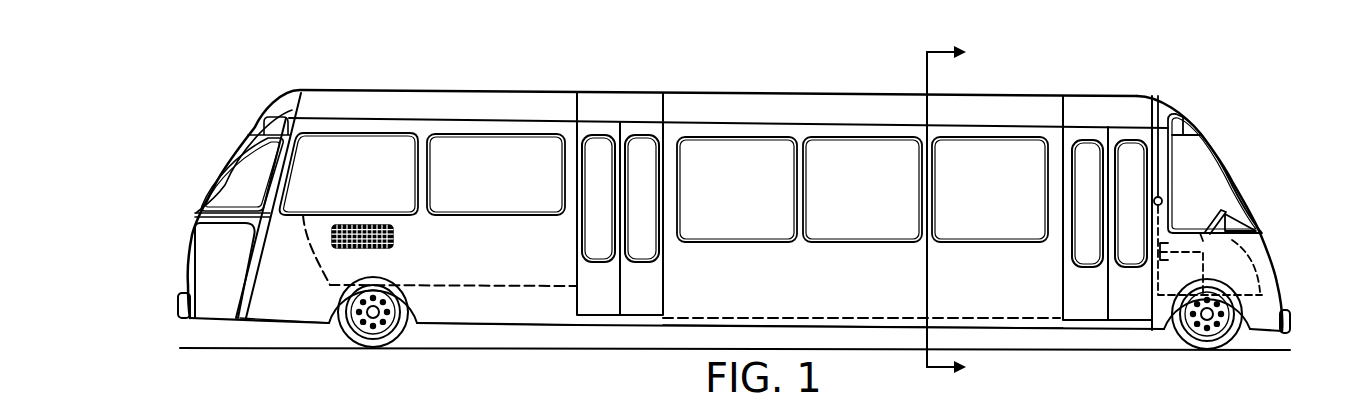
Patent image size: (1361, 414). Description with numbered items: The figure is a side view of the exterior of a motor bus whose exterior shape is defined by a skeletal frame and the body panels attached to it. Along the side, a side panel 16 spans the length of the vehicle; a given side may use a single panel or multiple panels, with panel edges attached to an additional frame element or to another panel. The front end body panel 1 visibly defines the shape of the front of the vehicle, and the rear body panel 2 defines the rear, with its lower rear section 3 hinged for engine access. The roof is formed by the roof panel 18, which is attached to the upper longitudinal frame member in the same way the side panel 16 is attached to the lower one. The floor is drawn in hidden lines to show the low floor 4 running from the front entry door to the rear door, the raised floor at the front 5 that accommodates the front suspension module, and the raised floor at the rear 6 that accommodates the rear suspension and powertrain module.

The front end body panel 1 is at (1253, 250).
The rear body panel 2 is at (283, 108).
The lower rear section 3 is at (198, 252).
The low floor 4 is at (878, 318).
The raised floor at the front 5 is at (1262, 383).
The raised floor at the rear 6 is at (472, 288).
The side panel 16 is at (300, 308).
The roof panel 18 is at (398, 98).